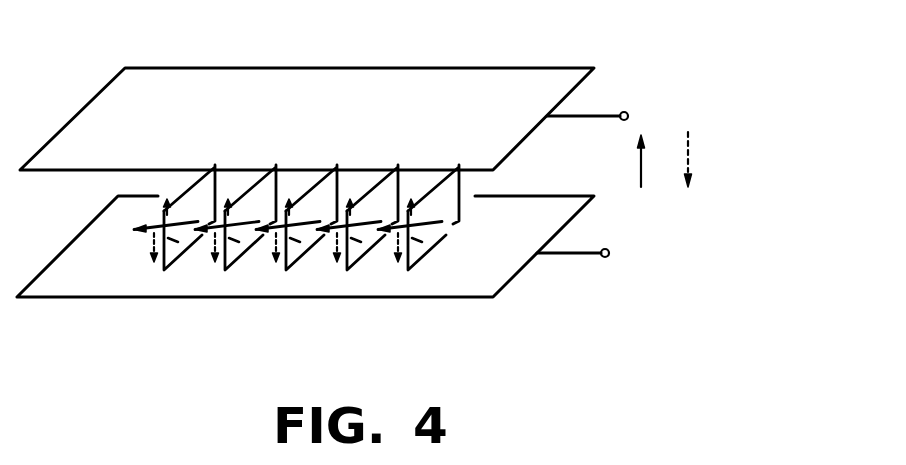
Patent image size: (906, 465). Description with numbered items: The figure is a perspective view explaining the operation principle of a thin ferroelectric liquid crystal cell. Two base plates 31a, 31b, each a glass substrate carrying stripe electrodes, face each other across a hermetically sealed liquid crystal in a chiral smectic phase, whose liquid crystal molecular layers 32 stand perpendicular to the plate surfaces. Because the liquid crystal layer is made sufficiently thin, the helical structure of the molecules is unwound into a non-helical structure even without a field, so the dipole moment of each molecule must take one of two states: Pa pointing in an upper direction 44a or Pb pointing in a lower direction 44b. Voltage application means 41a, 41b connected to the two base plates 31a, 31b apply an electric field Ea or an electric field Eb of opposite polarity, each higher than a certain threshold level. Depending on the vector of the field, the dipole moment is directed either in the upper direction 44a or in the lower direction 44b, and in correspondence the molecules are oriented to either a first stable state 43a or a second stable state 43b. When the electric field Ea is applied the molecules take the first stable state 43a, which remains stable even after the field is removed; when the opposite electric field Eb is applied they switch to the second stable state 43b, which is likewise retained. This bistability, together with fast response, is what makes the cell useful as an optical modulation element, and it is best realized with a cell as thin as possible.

The base plate 31a is at (503, 80).
The base plate 31b is at (473, 287).
The liquid crystal molecular layers 32 is at (460, 188).
The voltage application means 41a is at (626, 112).
The voltage application means 41b is at (608, 257).
The first stable state 43a is at (186, 222).
The second stable state 43b is at (172, 243).
The upper direction 44a is at (168, 207).
The lower direction 44b is at (149, 250).
The electric field Ea is at (659, 161).
The electric field Eb is at (706, 159).